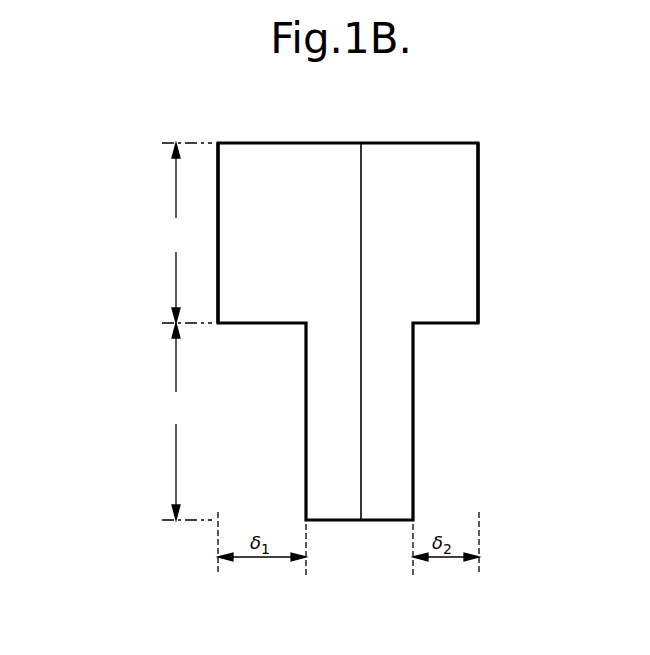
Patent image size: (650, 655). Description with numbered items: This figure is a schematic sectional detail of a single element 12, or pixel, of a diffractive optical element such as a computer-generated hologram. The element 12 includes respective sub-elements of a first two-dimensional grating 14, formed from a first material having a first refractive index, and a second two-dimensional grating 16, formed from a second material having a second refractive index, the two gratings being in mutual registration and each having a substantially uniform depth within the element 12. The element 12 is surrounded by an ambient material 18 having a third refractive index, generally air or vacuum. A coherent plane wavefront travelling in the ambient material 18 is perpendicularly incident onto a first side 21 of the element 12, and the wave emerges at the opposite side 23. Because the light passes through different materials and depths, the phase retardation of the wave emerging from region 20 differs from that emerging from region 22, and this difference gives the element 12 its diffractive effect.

The element 12 is at (346, 130).
The first two-dimensional grating 14 is at (289, 155).
The second two-dimensional grating 16 is at (430, 158).
The ambient material 18 is at (346, 606).
The region 20 is at (140, 238).
The first side 21 is at (217, 226).
The region 22 is at (148, 408).
The opposite side 23 is at (479, 190).